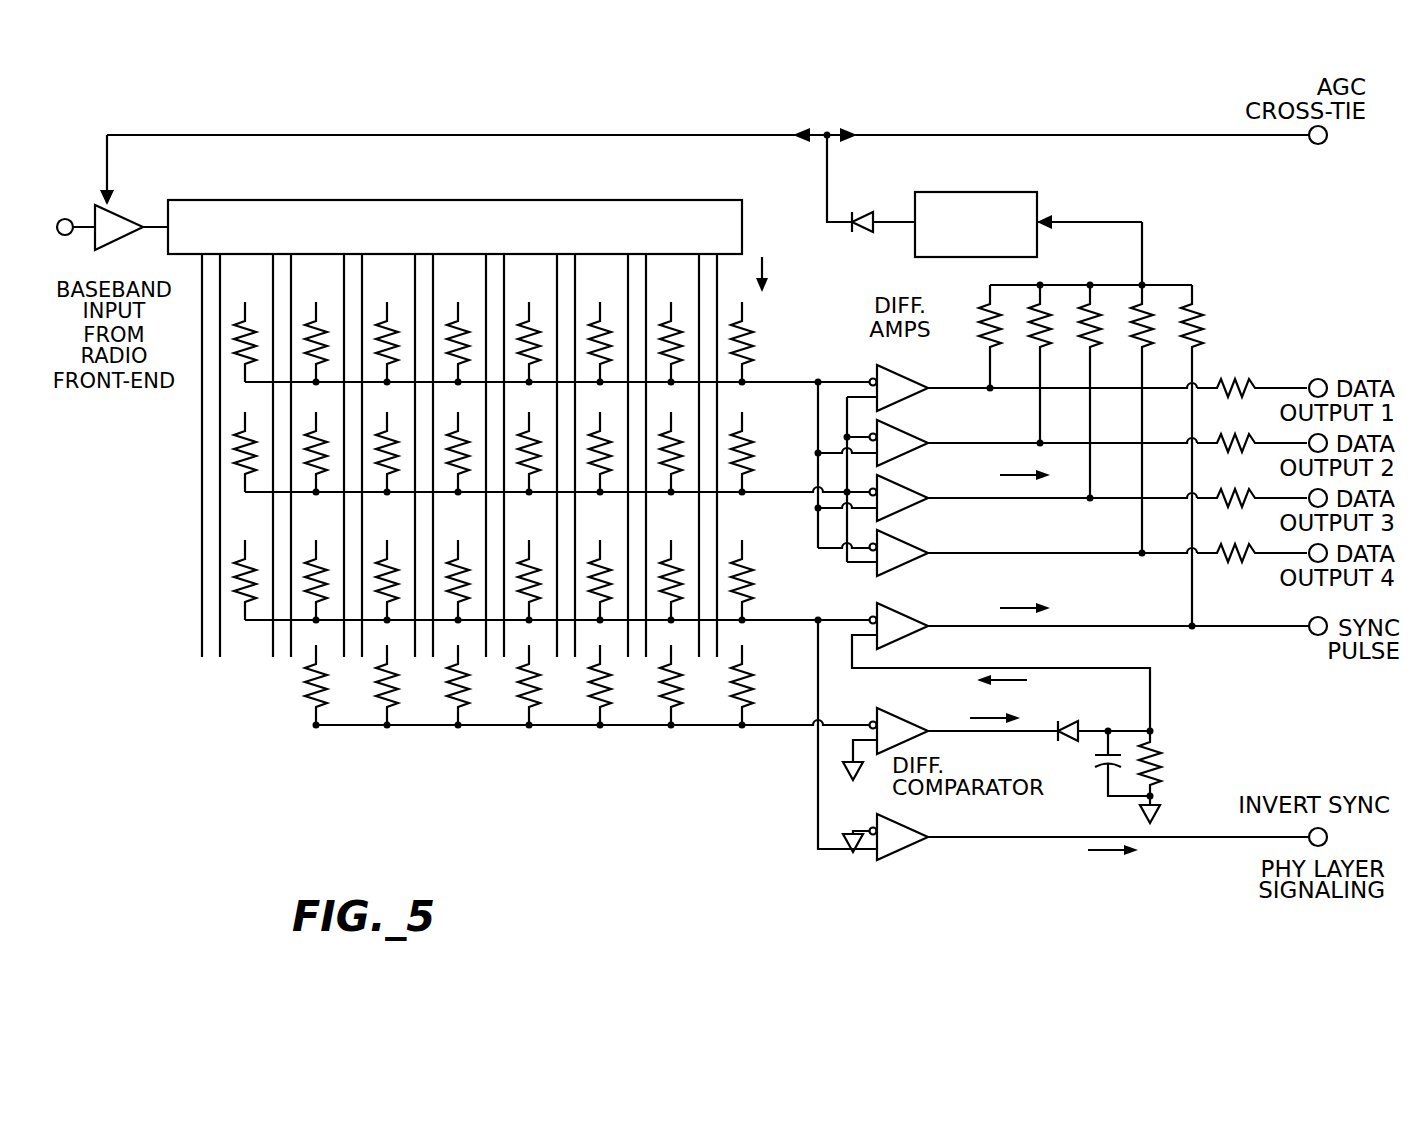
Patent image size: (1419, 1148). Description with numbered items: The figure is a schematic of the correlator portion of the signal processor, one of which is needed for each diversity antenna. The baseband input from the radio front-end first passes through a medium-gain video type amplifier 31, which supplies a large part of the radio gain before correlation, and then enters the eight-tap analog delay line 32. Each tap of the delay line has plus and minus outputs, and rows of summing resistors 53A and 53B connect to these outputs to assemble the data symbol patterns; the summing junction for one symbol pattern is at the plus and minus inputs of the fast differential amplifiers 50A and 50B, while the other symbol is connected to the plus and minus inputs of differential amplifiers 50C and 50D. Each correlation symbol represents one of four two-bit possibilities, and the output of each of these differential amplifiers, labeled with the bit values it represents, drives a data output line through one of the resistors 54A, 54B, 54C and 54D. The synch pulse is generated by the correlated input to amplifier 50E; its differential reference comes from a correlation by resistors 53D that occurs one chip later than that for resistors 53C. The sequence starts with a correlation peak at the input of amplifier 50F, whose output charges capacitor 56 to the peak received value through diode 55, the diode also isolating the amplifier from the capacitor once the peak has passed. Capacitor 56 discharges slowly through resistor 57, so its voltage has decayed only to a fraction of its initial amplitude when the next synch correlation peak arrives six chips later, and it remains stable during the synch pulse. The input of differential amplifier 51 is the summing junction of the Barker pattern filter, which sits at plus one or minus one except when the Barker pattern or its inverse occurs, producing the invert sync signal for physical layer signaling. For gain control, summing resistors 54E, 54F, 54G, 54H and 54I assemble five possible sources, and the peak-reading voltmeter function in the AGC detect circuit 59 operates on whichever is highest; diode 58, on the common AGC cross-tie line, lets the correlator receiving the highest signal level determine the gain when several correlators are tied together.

The video type amplifier 31 is at (112, 205).
The delay line 32 is at (743, 200).
The fast differential amplifier 50A is at (893, 372).
The fast differential amplifier 50B is at (893, 427).
The differential amplifier 50C is at (893, 482).
The differential amplifier 50D is at (893, 537).
The amplifier 50E is at (893, 610).
The amplifier 50F is at (893, 715).
The differential amplifier 51 is at (893, 821).
The summing resistors 53A is at (762, 380).
The summing resistors 53B is at (753, 490).
The resistors 53C is at (758, 620).
The resistors 53D is at (776, 732).
The resistor 54A is at (1252, 379).
The resistor 54B is at (1252, 434).
The resistor 54C is at (1252, 489).
The resistor 54D is at (1252, 544).
The summing resistor 54E is at (985, 310).
The summing resistor 54F is at (1043, 312).
The summing resistor 54G is at (1095, 312).
The summing resistor 54H is at (1145, 312).
The summing resistor 54I is at (1200, 332).
The diode 55 is at (1068, 720).
The capacitor 56 is at (1094, 766).
The resistor 57 is at (1163, 763).
The diode 58 is at (862, 211).
The AGC detect 59 is at (1018, 192).